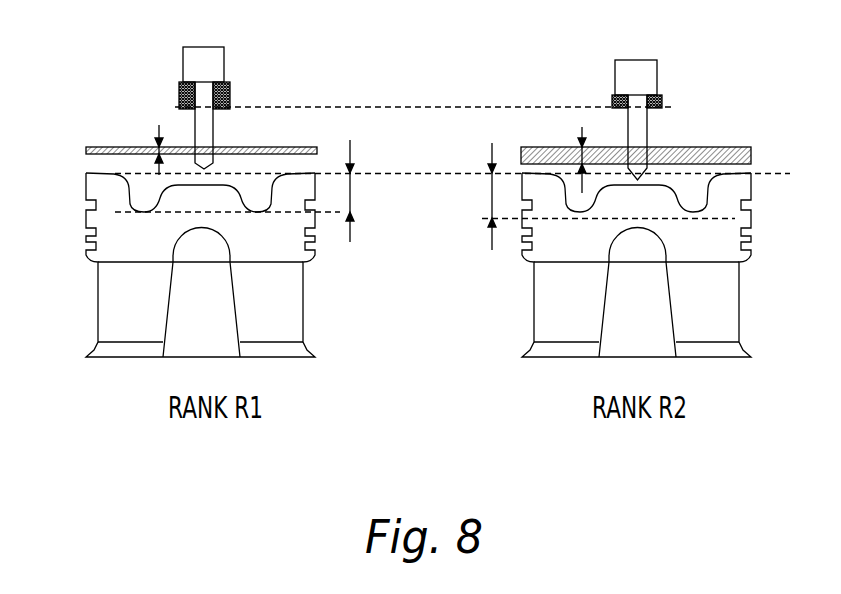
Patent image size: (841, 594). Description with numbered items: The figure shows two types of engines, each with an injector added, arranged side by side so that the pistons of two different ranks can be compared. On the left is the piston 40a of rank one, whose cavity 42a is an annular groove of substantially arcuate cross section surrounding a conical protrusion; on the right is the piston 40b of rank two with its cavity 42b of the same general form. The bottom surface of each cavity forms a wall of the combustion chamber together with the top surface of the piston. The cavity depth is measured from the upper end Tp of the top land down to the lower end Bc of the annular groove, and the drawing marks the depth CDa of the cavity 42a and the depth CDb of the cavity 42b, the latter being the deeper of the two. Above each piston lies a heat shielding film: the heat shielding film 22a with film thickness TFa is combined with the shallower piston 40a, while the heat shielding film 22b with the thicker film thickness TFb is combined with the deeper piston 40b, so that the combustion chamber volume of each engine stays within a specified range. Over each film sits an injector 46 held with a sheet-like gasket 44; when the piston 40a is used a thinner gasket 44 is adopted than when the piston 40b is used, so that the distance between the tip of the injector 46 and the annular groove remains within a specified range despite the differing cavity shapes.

The heat shielding film 22a is at (86, 150).
The heat shielding film 22b is at (751, 156).
The piston 40a is at (216, 281).
The piston 40b is at (642, 279).
The cavity 42a is at (235, 184).
The cavity 42b is at (673, 181).
The gasket 44 is at (179, 98).
The injector 46 is at (224, 65).
The upper end of top land Tp is at (306, 147).
The film thickness TFa is at (158, 141).
The film thickness TFb is at (583, 141).
The depth of cavity CDa is at (351, 196).
The depth of cavity CDb is at (491, 193).
The lower end of annular groove Bc is at (256, 213).